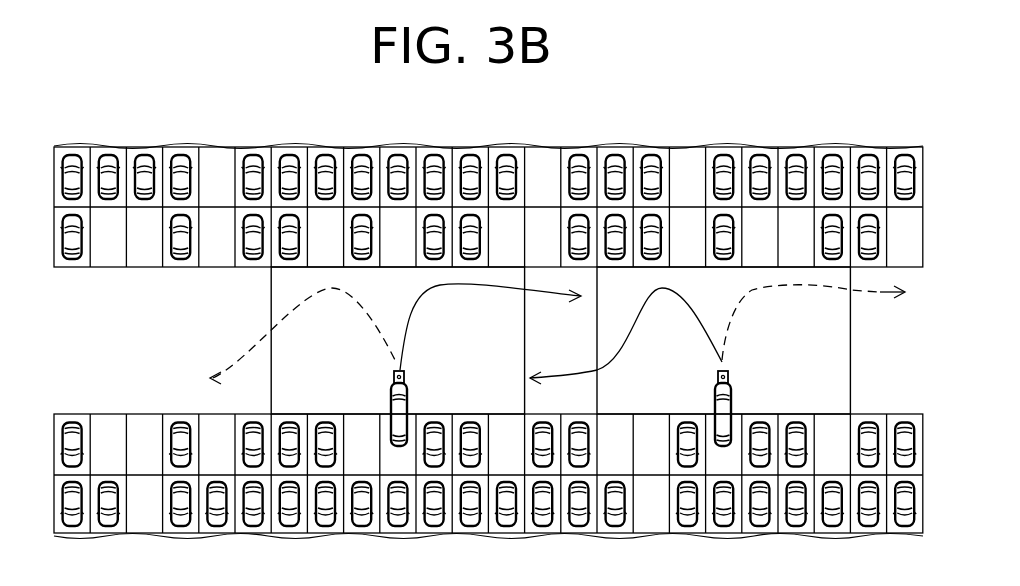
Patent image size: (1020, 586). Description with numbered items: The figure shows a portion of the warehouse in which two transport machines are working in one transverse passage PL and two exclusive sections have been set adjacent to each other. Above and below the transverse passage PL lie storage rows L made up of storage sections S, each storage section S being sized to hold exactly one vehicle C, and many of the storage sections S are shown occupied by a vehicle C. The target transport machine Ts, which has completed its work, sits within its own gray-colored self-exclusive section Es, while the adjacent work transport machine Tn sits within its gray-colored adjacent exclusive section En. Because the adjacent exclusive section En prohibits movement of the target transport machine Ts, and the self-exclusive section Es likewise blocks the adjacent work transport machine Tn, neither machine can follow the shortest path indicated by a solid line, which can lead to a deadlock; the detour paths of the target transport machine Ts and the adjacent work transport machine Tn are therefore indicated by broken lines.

The transverse passage PL is at (488, 341).
The storage section S is at (54, 181).
The storage row L is at (70, 296).
The vehicle C is at (72, 414).
The self-exclusive section Es is at (409, 303).
The target transport machine Ts is at (409, 385).
The adjacent exclusive section En is at (728, 303).
The adjacent work transport machine Tn is at (716, 388).